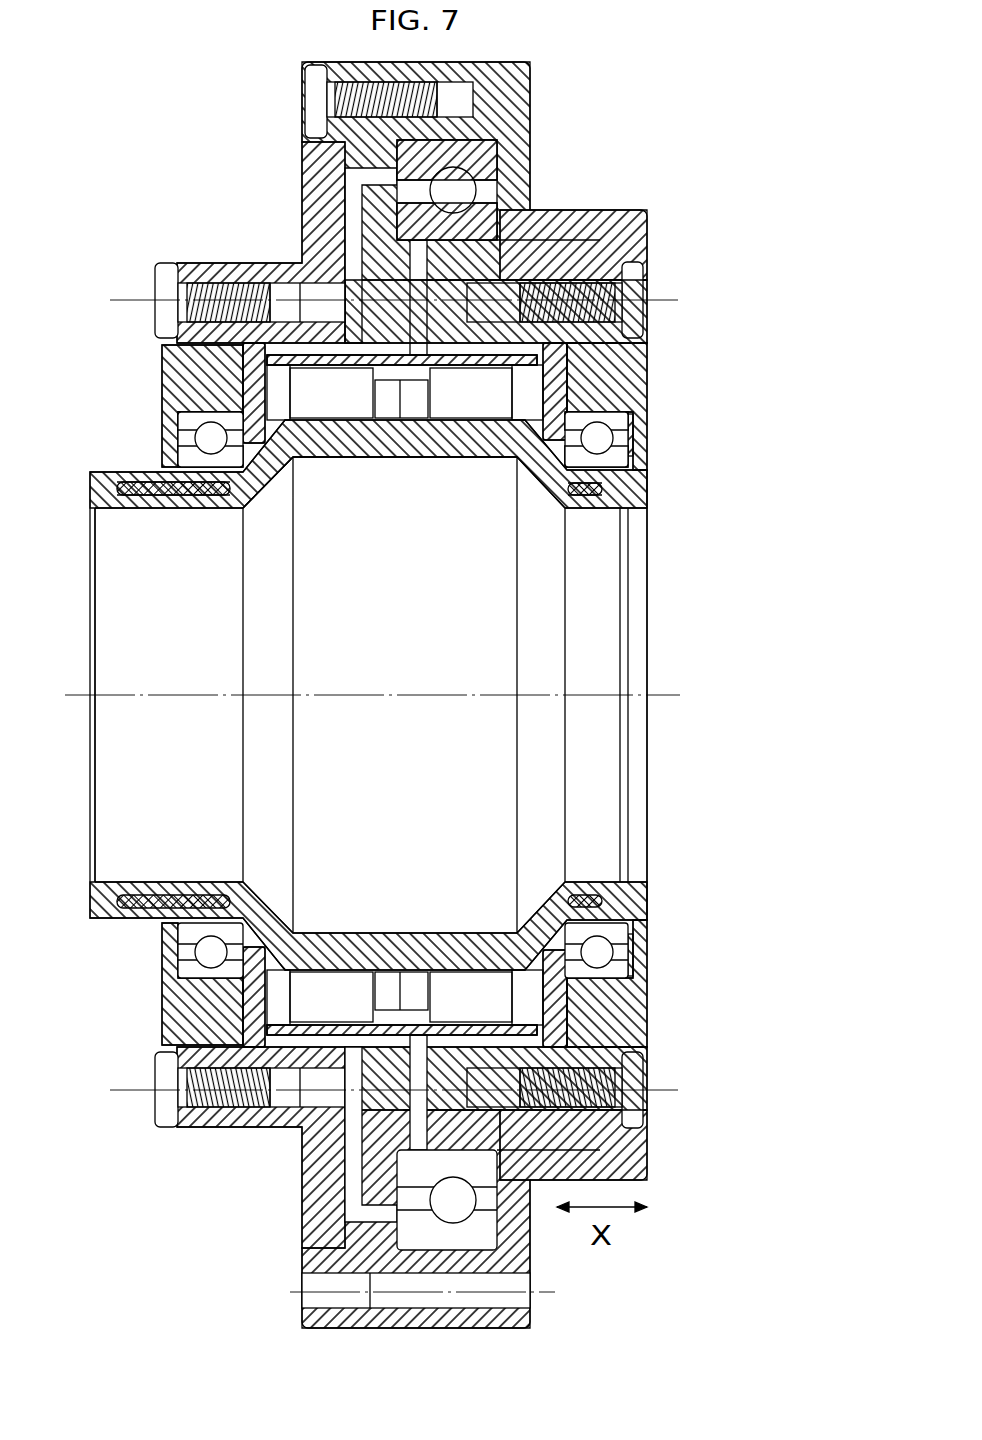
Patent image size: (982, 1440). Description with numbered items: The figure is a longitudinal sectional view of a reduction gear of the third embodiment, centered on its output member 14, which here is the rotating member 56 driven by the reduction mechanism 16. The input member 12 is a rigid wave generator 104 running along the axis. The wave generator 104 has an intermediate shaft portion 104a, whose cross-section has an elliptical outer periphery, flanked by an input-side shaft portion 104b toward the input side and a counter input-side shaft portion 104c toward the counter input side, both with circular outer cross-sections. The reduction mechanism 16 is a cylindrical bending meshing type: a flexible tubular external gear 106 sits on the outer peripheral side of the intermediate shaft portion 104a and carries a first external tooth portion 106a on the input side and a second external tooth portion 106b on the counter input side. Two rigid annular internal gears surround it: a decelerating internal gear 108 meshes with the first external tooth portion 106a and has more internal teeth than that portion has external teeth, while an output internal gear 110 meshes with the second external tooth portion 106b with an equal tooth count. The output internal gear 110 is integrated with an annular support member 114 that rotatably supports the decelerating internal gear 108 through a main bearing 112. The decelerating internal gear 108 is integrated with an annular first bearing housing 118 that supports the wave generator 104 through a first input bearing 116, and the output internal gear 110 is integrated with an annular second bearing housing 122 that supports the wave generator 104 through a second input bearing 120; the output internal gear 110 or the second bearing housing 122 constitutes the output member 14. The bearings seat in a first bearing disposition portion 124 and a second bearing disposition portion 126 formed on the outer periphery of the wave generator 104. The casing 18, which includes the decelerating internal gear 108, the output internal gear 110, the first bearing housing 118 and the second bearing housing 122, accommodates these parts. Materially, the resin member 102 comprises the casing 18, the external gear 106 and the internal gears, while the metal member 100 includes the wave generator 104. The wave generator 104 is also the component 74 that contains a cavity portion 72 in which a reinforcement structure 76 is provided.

The input member 12 is at (435, 695).
The output member 14 is at (331, 592).
The reduction mechanism 16 is at (642, 1010).
The casing 18 is at (370, 208).
The rotating member 56 is at (331, 592).
The cavity portion 72 is at (128, 498).
The component 74 is at (435, 695).
The reinforcement structure 76 is at (148, 505).
The metal member 100 is at (435, 695).
The resin member 102 is at (416, 695).
The wave generator 104 is at (435, 695).
The intermediate shaft portion 104a is at (402, 459).
The input-side shaft portion 104b is at (625, 588).
The counter input-side shaft portion 104c is at (163, 510).
The external gear 106 is at (387, 330).
The first external tooth portion 106a is at (640, 695).
The second external tooth portion 106b is at (400, 344).
The decelerating internal gear 108 is at (542, 228).
The output internal gear 110 is at (265, 262).
The main bearing 112 is at (500, 148).
The annular support member 114 is at (531, 82).
The first input bearing 116 is at (640, 427).
The first bearing housing 118 is at (648, 402).
The second input bearing 120 is at (166, 450).
The second bearing housing 122 is at (166, 398).
The first bearing disposition portion 124 is at (625, 512).
The second bearing disposition portion 126 is at (270, 512).